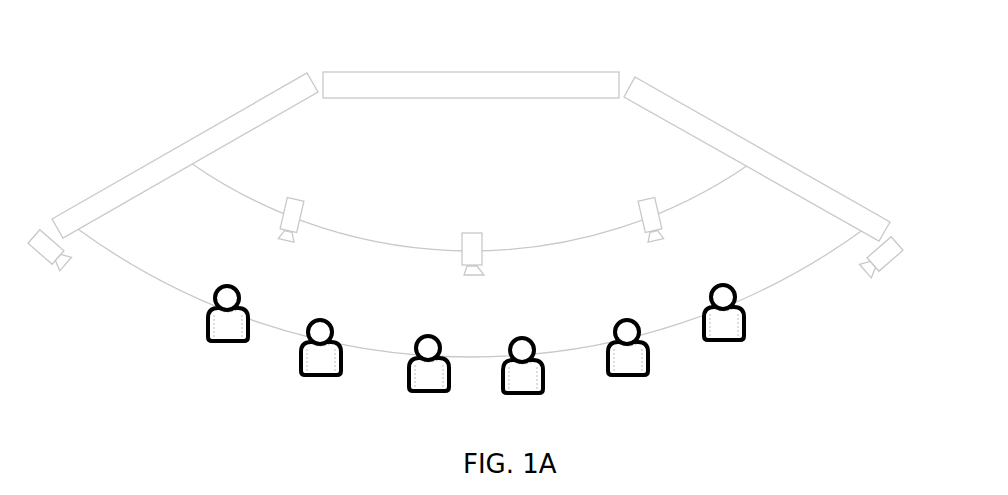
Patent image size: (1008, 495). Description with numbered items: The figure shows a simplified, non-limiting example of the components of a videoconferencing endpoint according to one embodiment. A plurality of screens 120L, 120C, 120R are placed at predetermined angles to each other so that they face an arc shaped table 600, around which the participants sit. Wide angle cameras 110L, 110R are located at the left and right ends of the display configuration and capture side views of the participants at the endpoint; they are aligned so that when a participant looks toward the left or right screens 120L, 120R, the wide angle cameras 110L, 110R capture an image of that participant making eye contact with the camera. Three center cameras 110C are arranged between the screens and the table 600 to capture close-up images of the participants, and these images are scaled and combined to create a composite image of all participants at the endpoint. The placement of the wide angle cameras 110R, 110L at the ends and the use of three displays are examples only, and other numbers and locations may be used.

The left screen 120L is at (185, 155).
The center screen 120C is at (471, 70).
The right screen 120R is at (757, 159).
The left wide angle camera 110L is at (57, 264).
The center cameras 110C is at (631, 219).
The right wide angle camera 110R is at (877, 268).
The arc shaped table 600 is at (209, 258).